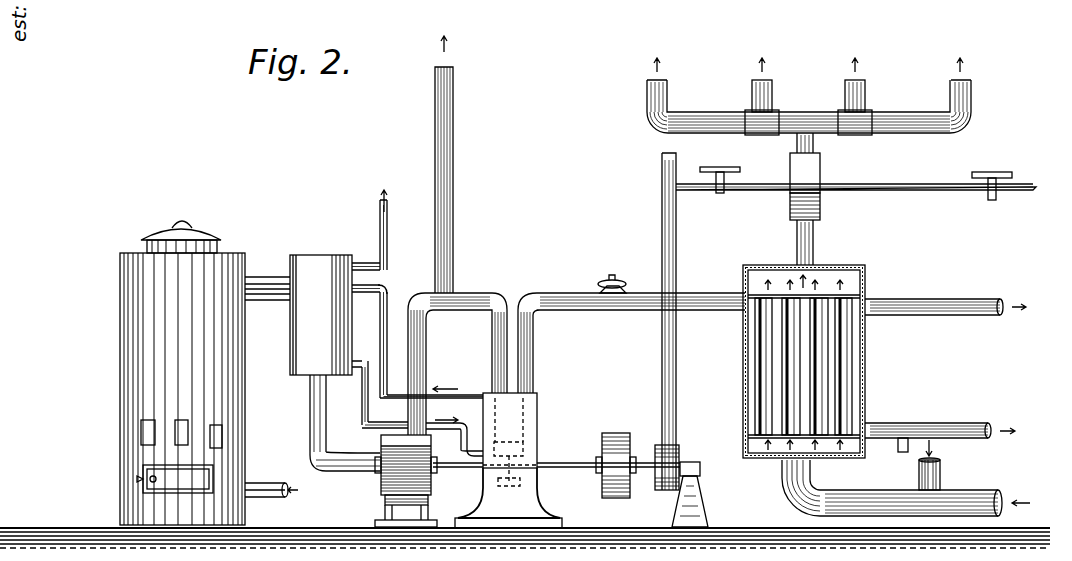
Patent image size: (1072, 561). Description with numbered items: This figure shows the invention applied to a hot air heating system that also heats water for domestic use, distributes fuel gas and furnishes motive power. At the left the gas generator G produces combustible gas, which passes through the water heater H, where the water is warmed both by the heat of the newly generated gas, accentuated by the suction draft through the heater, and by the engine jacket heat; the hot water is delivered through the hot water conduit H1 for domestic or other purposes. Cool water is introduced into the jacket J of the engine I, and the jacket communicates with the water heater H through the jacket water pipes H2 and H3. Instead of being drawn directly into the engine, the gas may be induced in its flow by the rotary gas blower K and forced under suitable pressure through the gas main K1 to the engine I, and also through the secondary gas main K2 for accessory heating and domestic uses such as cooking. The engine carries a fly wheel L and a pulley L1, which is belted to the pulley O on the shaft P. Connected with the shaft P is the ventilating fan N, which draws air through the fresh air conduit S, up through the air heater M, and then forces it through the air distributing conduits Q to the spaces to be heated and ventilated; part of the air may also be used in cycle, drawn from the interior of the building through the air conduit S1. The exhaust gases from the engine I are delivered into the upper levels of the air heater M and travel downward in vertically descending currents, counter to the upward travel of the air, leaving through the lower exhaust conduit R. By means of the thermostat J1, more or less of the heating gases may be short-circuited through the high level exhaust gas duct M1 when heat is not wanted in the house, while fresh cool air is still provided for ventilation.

The gas generator G is at (209, 373).
The water heater H is at (321, 315).
The hot water conduit H1 is at (378, 222).
The jacket water pipe (inlet) H2 is at (362, 407).
The jacket water pipe (outlet) H3 is at (379, 318).
The engine I is at (508, 477).
The jacket J is at (540, 424).
The thermostat J1 is at (602, 286).
The gas blower K is at (408, 455).
The gas main K1 is at (432, 368).
The secondary gas main K2 is at (438, 148).
The fly wheel L is at (612, 476).
The pulley L1 is at (678, 458).
The air heater M is at (820, 361).
The high level exhaust gas duct M1 is at (932, 304).
The ventilating fan N is at (820, 202).
The pulley O is at (661, 185).
The shaft P is at (948, 186).
The air distributing conduits Q is at (752, 98).
The lower exhaust conduit R is at (957, 412).
The fresh air (inlet) conduit S is at (1004, 500).
The air conduit from interior space heated S1 is at (942, 478).